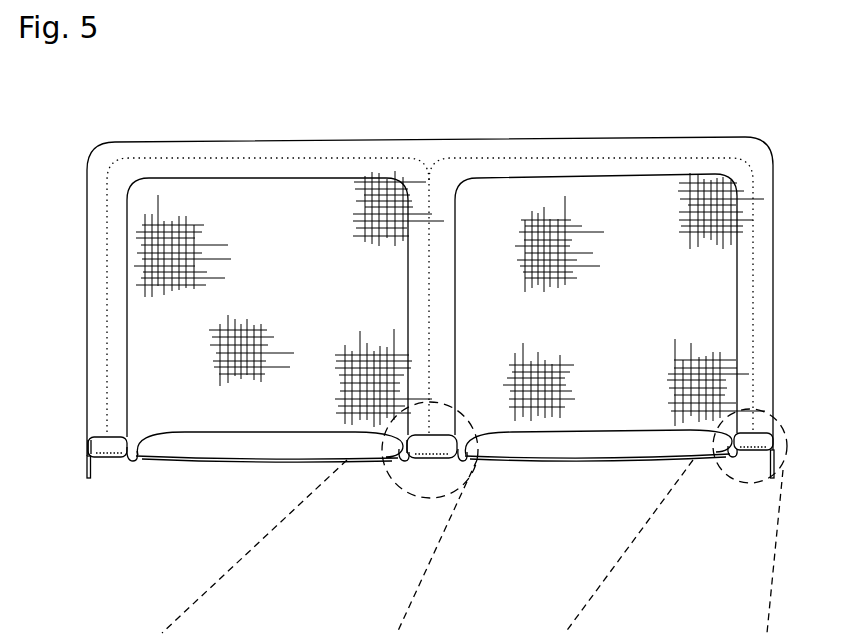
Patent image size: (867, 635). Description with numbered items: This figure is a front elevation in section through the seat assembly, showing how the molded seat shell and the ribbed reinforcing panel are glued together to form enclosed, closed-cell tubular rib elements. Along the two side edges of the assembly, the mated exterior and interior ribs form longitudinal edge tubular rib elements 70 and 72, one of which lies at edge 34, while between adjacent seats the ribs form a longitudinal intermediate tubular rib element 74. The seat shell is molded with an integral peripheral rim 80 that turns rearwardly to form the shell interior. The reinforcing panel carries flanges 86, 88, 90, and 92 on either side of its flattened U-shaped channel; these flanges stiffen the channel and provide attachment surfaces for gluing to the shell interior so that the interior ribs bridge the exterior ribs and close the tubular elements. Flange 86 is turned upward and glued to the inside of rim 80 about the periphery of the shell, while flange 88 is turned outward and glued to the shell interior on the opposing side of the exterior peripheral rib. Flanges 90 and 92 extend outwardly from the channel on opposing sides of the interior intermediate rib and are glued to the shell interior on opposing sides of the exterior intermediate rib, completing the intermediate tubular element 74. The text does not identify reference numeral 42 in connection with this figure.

The edge of the seat assembly 34 is at (772, 470).
The seat cushion 42 is at (748, 452).
The longitudinal edge tubular rib element 70 is at (110, 438).
The longitudinal edge tubular rib element 72 is at (753, 436).
The longitudinal intermediate tubular rib element 74 is at (425, 432).
The peripheral rim 80 is at (91, 480).
The flange 86 is at (88, 447).
The flange 88 is at (134, 453).
The flange 90 is at (390, 438).
The flange 92 is at (462, 452).